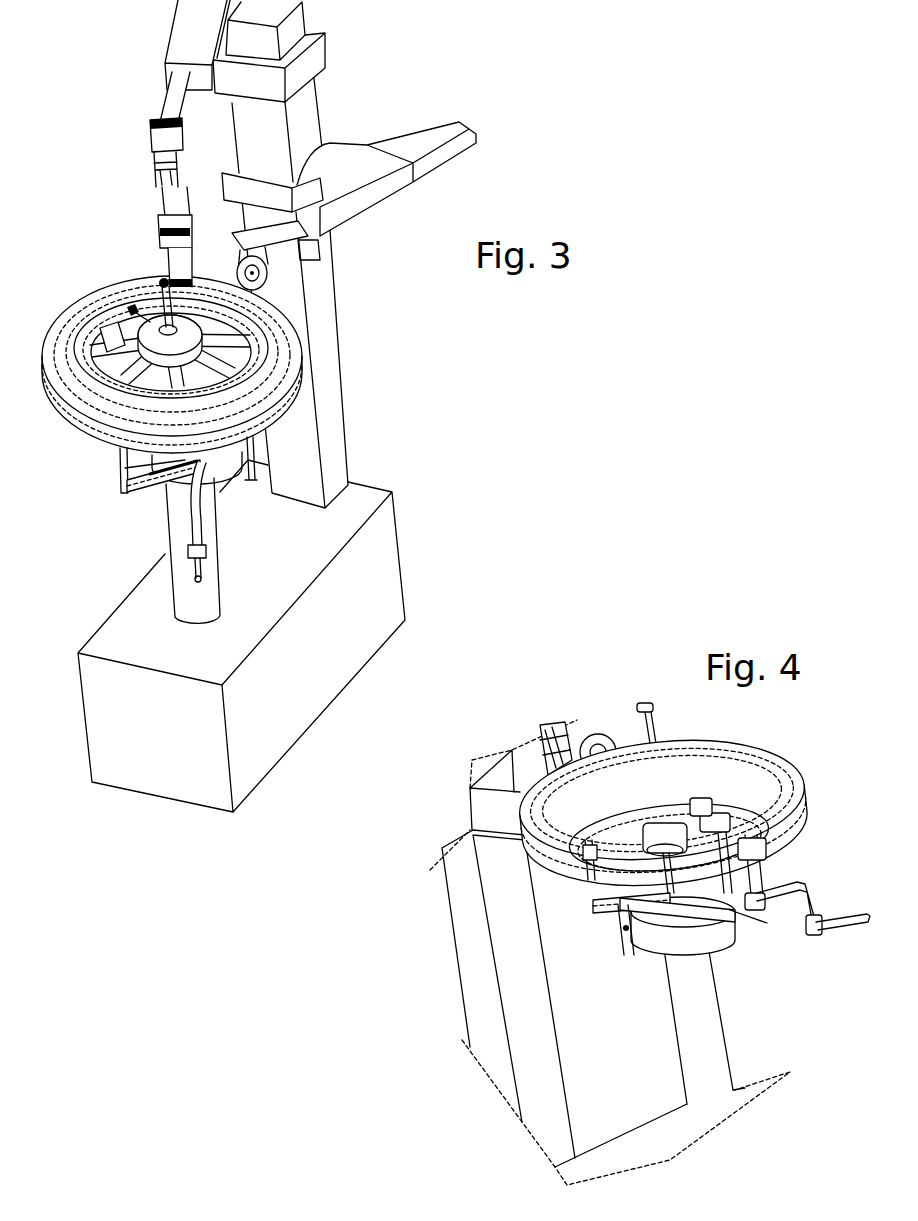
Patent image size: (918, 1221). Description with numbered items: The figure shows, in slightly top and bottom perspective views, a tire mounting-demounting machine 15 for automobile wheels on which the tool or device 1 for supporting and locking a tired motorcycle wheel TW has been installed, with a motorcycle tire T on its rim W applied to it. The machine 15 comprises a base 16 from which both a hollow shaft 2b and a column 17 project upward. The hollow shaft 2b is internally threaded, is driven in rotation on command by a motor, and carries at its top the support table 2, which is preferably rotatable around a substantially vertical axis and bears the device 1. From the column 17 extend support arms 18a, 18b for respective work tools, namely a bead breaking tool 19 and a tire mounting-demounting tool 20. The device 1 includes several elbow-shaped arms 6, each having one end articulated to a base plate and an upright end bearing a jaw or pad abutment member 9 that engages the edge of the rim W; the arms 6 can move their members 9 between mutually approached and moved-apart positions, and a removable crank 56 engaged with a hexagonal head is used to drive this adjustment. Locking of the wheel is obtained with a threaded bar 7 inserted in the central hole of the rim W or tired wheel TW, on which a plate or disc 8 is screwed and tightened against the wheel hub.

In FIG. 3, the tool or device 1 is at (118, 492).
In FIG. 4, the tool or device 1 is at (717, 951).
In FIG. 4, the support table 2 is at (641, 957).
In FIG. 3, the hollow shaft 2b is at (167, 535).
In FIG. 4, the hollow shaft 2b is at (668, 992).
In FIG. 4, the elbow-shaped arms 6 is at (593, 901).
In FIG. 3, the threaded bar 7 is at (143, 293).
In FIG. 4, the threaded bar 7 is at (656, 733).
In FIG. 3, the plate or disc 8 is at (125, 310).
In FIG. 4, the jaw or pad abutment member 9 is at (761, 857).
In FIG. 3, the tire mounting-demounting machine 15 is at (274, 441).
In FIG. 3, the base 16 is at (400, 568).
In FIG. 3, the column 17 is at (332, 282).
In FIG. 4, the column 17 is at (451, 963).
In FIG. 3, the support arm 18a is at (432, 170).
In FIG. 3, the support arm 18b is at (167, 102).
In FIG. 3, the bead breaking tool 19 is at (275, 285).
In FIG. 3, the tire mounting-demounting tool 20 is at (167, 263).
In FIG. 4, the crank 56 is at (792, 897).
In FIG. 3, the tire T is at (297, 398).
In FIG. 4, the tire T is at (806, 800).
In FIG. 3, the rim W is at (240, 358).
In FIG. 3, the tired wheel TW is at (196, 373).
In FIG. 4, the tired wheel TW is at (683, 812).